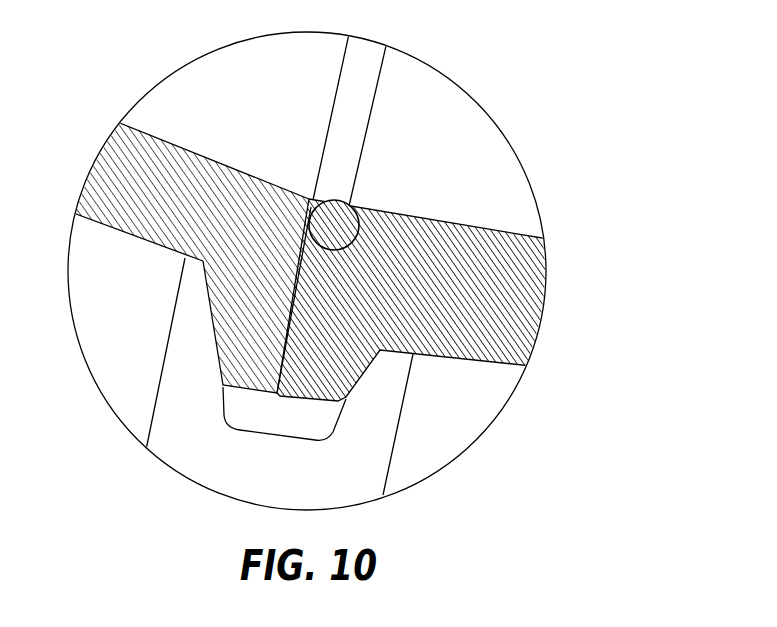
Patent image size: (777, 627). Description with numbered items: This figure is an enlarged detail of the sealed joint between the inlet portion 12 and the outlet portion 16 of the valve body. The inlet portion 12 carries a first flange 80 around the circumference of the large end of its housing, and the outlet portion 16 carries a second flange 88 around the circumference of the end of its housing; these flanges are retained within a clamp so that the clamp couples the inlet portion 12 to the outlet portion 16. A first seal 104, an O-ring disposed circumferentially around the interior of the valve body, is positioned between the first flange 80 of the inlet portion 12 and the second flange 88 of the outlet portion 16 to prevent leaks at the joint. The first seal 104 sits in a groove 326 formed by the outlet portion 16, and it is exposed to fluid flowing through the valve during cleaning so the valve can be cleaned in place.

The inlet portion 12 is at (150, 182).
The outlet portion 16 is at (487, 280).
The first flange 80 is at (253, 302).
The second flange 88 is at (340, 328).
The first seal 104 is at (337, 217).
The groove 326 is at (313, 190).